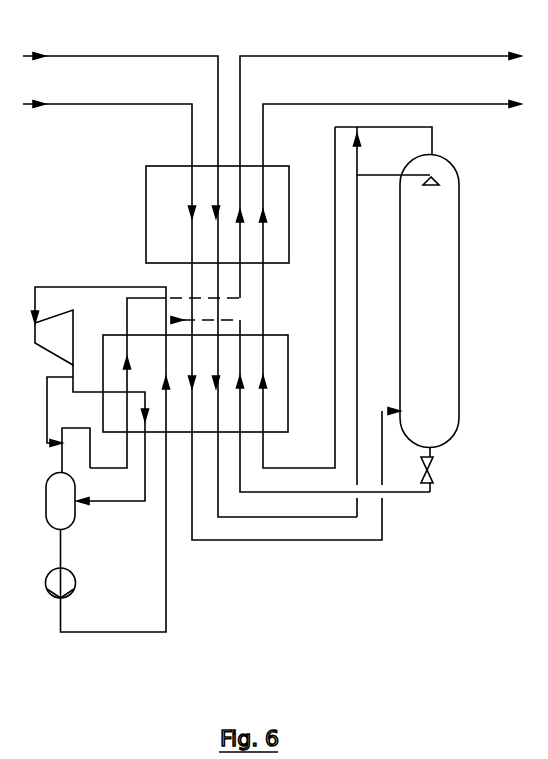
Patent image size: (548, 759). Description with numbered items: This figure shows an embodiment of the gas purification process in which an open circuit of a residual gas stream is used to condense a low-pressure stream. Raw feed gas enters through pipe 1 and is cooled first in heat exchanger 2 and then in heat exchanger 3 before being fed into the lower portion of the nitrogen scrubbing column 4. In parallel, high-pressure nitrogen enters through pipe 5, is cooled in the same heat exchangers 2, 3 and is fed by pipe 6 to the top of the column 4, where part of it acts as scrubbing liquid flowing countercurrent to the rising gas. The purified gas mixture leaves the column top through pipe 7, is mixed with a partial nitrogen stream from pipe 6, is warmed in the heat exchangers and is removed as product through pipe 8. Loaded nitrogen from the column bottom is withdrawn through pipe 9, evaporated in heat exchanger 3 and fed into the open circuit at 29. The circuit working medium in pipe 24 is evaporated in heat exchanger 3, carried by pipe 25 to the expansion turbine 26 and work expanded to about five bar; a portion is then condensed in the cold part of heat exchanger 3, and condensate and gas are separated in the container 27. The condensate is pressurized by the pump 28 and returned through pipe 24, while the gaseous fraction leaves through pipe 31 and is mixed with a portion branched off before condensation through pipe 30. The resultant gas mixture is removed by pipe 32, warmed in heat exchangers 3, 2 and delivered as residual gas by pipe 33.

The pipe 1 is at (75, 104).
The heat exchanger 2 is at (146, 212).
The heat exchanger 3 is at (118, 433).
The nitrogen scrubbing column 4 is at (459, 315).
The pipe 5 is at (75, 56).
The pipe 6 is at (358, 313).
The pipe 7 is at (432, 138).
The pipe 8 is at (421, 104).
The pipe 9 is at (431, 487).
The pipe 24 is at (168, 611).
The pipe 25 is at (76, 286).
The expansion turbine 26 is at (45, 349).
The container 27 is at (46, 508).
The pump 28 is at (53, 597).
The feed point into circuit 29 is at (172, 320).
The pipe 30 is at (47, 413).
The pipe 31 is at (62, 458).
The pipe 32 is at (118, 468).
The pipe 33 is at (406, 56).